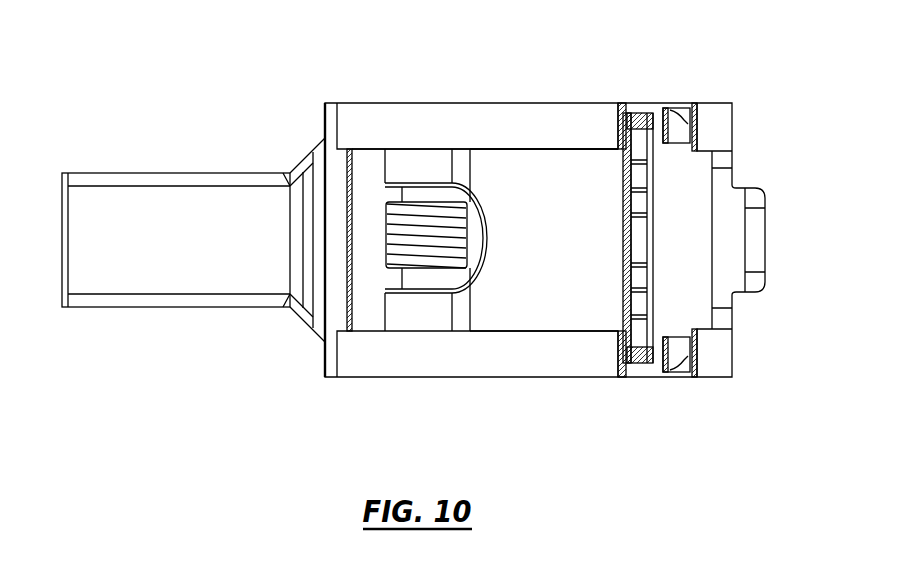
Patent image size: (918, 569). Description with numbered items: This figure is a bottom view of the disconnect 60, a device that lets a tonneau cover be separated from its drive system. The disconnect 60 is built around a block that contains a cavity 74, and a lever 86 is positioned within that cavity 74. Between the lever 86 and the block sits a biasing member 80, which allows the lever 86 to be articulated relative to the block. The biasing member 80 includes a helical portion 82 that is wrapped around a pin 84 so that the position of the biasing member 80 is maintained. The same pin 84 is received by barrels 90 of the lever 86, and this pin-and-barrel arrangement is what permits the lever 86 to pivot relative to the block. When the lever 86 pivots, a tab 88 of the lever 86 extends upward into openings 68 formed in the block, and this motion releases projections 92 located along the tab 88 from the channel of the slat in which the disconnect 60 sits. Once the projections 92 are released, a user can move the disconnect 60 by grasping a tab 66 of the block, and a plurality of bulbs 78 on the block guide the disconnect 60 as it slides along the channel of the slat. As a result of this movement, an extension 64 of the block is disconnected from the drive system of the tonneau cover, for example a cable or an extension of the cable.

The disconnect 60 is at (266, 90).
The extension 64 is at (117, 223).
The tab 66 is at (733, 240).
The openings 68 is at (665, 101).
The cavity 74 is at (510, 145).
The bulbs 78 is at (365, 122).
The biasing member 80 is at (417, 243).
The helical portion 82 is at (426, 235).
The pin 84 is at (417, 281).
The lever 86 is at (540, 287).
The tab 88 is at (640, 230).
The barrels 90 is at (415, 160).
The projections 92 is at (641, 110).